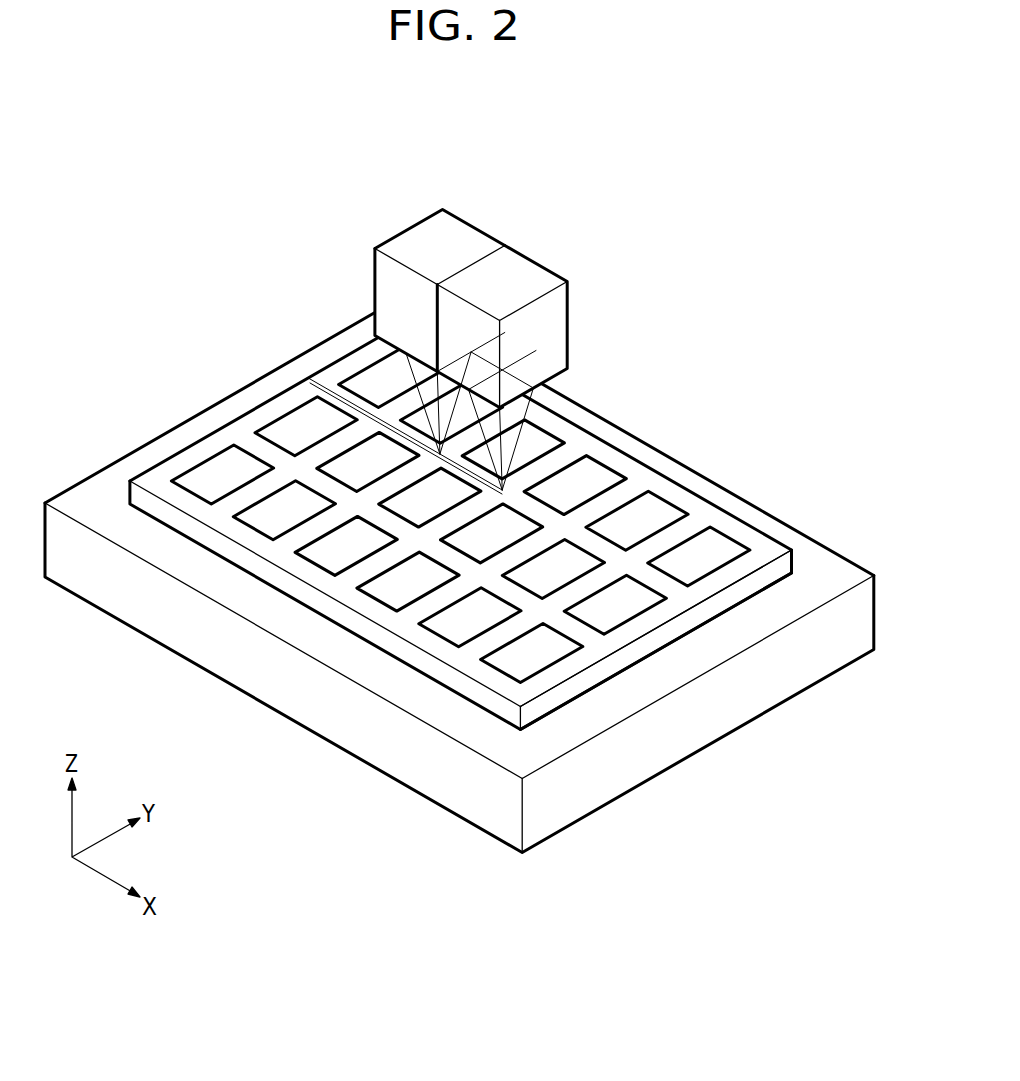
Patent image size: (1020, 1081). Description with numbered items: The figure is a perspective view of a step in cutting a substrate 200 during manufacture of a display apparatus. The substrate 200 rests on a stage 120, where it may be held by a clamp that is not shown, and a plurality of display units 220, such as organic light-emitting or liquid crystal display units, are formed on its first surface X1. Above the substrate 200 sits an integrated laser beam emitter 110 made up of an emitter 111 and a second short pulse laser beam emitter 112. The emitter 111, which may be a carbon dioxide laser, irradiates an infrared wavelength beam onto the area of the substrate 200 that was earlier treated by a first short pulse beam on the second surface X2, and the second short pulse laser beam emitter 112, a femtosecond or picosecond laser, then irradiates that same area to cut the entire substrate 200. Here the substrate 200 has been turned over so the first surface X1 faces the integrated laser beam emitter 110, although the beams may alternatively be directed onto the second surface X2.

The integrated laser beam emitter 110 is at (491, 274).
The emitter 111 is at (532, 267).
The second short pulse laser beam emitter 112 is at (472, 230).
The stage 120 is at (833, 562).
The substrate 200 is at (747, 517).
The display unit 220 is at (662, 508).
The first surface X1 is at (672, 612).
The second surface X2 is at (658, 653).